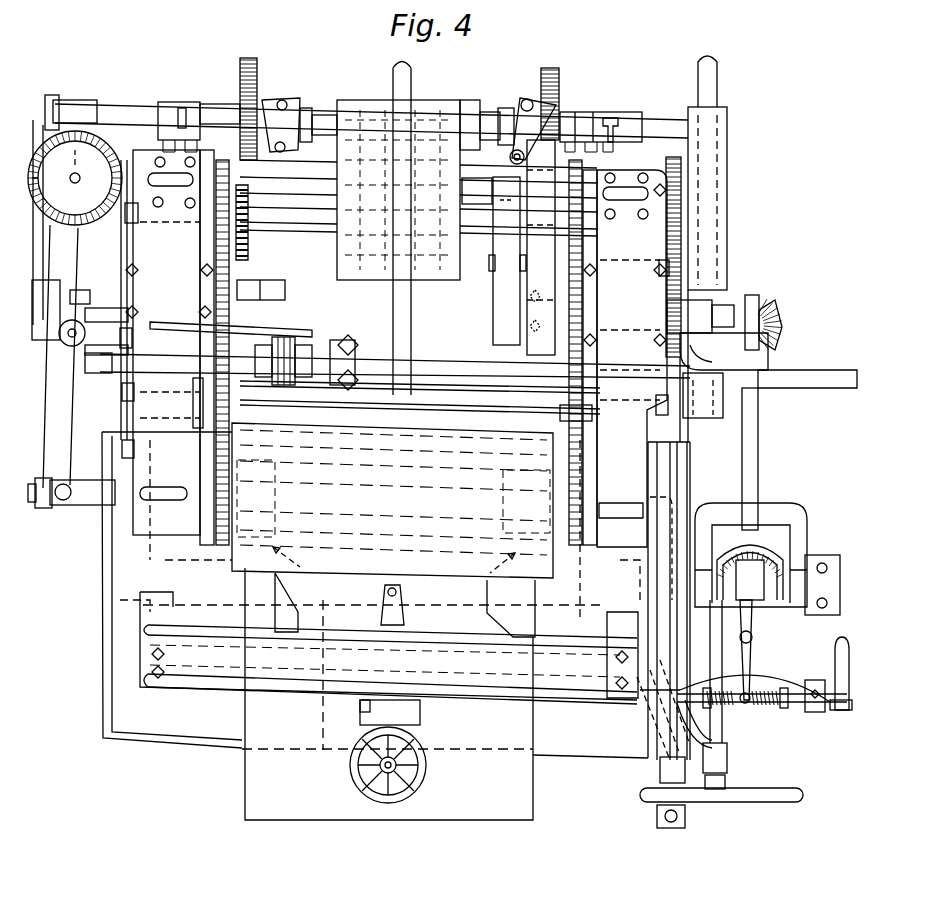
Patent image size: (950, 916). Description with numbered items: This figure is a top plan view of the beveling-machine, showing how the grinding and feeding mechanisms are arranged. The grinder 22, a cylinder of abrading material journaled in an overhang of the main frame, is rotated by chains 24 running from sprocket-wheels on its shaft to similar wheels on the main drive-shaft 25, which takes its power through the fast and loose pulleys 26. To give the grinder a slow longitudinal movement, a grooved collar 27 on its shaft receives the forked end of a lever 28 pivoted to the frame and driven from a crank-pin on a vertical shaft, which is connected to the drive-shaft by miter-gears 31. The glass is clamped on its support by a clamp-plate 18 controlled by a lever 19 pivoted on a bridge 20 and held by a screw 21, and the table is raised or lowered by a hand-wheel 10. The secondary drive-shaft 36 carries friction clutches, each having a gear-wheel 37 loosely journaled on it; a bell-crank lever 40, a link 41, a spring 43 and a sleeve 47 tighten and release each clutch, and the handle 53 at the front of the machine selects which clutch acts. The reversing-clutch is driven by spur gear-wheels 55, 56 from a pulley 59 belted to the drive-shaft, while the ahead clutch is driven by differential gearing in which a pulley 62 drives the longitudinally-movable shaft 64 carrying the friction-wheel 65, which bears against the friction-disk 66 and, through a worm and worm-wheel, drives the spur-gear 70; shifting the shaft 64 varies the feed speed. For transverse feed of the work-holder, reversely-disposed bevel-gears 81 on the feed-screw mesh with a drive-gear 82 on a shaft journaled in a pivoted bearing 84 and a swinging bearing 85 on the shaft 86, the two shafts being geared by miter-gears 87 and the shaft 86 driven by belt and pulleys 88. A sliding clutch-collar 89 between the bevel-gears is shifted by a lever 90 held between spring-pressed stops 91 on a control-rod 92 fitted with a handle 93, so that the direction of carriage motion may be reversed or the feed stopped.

The hand-wheel 10 is at (773, 804).
The clamp-plate 18 is at (403, 600).
The lever 19 is at (390, 712).
The bridge 20 is at (389, 648).
The screw 21 is at (420, 770).
The grinder 22 is at (392, 500).
The chains 24 is at (232, 416).
The main drive-shaft 25 is at (477, 191).
The fast and loose pulleys 26 is at (398, 190).
The grooved collar 27 is at (90, 506).
The lever 28 is at (54, 356).
The miter-gears 31 is at (80, 180).
The shaft 36 is at (64, 210).
The gear-wheel 37 is at (250, 62).
The bell-crank lever 40 is at (285, 98).
The link 41 is at (300, 108).
The spring 43 is at (759, 468).
The sleeve 47 is at (336, 118).
The handle or lever 53 is at (686, 818).
The gear-wheel 55 is at (576, 228).
The gear-wheel 56 is at (705, 200).
The pulley 59 is at (497, 261).
The pulley 62 is at (728, 246).
The longitudinally-movable shaft 64 is at (448, 362).
The friction-wheel 65 is at (296, 356).
The friction-disk 66 is at (300, 330).
The spur-gear 70 is at (244, 302).
The bevel-gears 81 is at (726, 590).
The drive-gear 82 is at (772, 548).
The bearing 84 is at (812, 556).
The bearing 85 is at (770, 355).
The shaft 86 is at (722, 303).
The miter-gears 87 is at (766, 334).
The belt and pulleys 88 is at (541, 247).
The sliding clutch-collar 89 is at (715, 694).
The lever 90 is at (750, 658).
The spring-pressed stops 91 is at (736, 706).
The control-rod 92 is at (795, 706).
The handle 93 is at (834, 662).